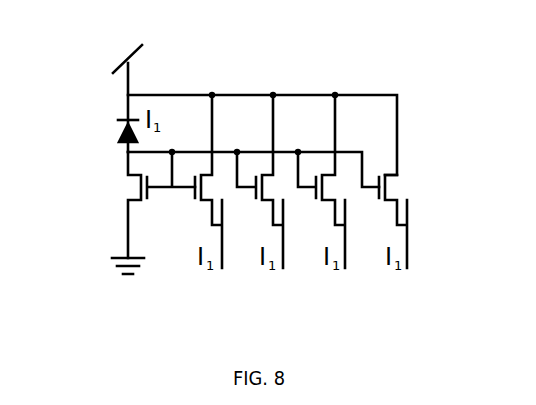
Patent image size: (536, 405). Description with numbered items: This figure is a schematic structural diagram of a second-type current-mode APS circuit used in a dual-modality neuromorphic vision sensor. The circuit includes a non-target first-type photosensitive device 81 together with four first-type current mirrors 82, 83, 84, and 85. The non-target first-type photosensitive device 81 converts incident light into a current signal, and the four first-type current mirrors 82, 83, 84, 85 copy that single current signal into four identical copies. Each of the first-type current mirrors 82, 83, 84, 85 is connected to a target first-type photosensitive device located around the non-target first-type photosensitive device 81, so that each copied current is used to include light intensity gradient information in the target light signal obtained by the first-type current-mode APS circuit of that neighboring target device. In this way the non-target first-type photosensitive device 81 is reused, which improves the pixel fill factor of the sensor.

The non-target first-type photosensitive device 81 is at (116, 131).
The first-type current mirror 82 is at (185, 212).
The first-type current mirror 83 is at (252, 212).
The first-type current mirror 84 is at (310, 212).
The first-type current mirror 85 is at (373, 212).